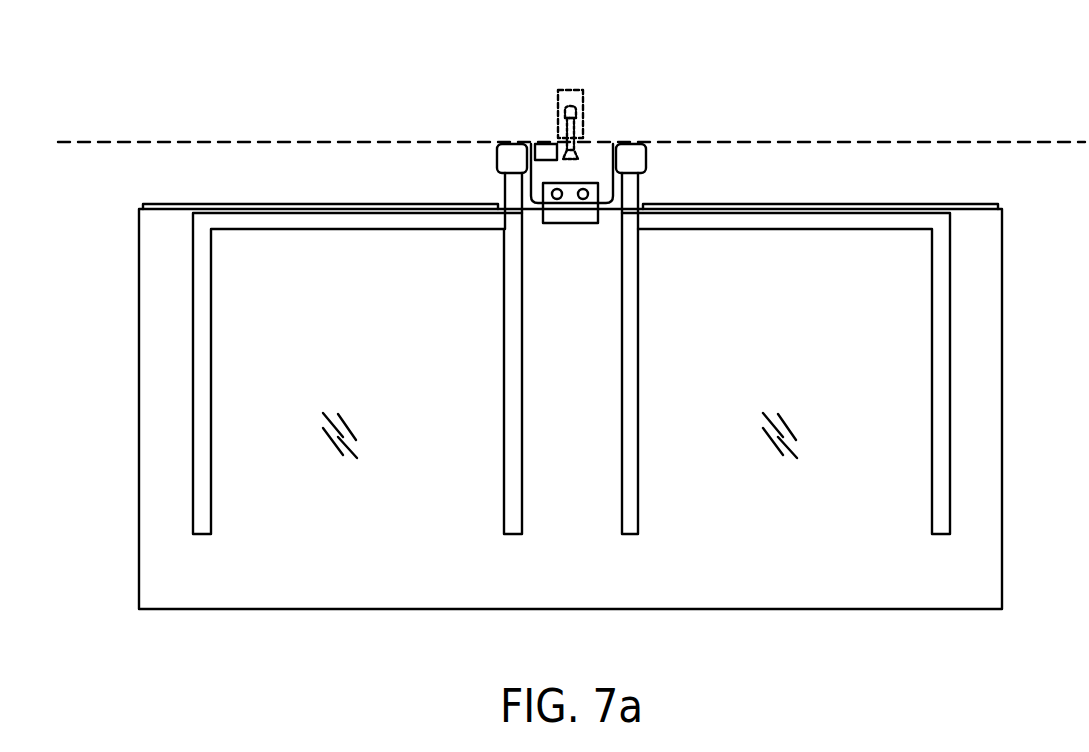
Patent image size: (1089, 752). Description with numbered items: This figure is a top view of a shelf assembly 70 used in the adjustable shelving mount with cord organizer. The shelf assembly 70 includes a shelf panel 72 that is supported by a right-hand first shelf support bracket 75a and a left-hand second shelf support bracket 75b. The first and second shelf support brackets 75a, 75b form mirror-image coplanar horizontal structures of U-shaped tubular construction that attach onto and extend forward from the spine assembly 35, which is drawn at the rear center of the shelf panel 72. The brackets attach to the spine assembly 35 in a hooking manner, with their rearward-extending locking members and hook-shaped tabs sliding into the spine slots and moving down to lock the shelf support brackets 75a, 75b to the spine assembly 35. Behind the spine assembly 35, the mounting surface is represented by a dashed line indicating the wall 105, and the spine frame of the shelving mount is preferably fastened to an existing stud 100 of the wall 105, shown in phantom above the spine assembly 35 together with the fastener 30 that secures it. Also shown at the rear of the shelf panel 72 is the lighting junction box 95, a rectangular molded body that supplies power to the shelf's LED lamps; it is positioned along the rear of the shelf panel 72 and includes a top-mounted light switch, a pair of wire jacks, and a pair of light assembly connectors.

The shelf assembly 70 is at (571, 341).
The shelf panel 72 is at (722, 586).
The first shelf support bracket 75a is at (953, 439).
The second shelf support bracket 75b is at (190, 404).
The spine assembly 35 is at (527, 125).
The lighting junction box 95 is at (578, 212).
The stud 100 is at (571, 102).
The screw 30 is at (577, 122).
The wall 105 is at (272, 142).